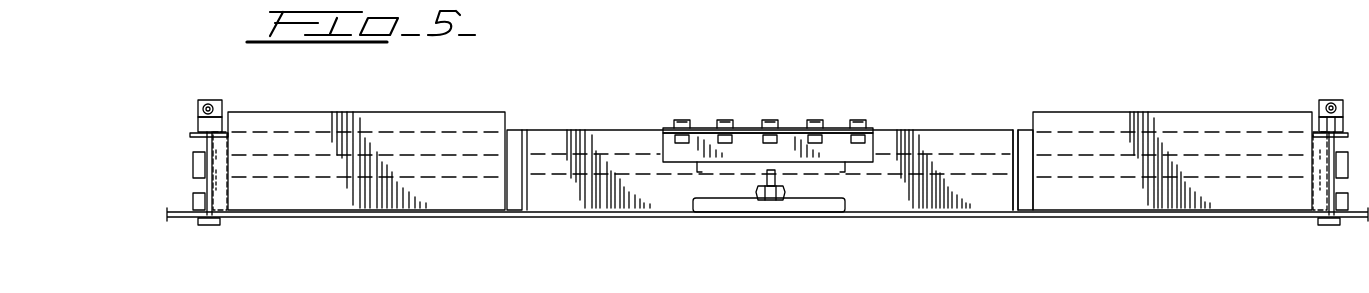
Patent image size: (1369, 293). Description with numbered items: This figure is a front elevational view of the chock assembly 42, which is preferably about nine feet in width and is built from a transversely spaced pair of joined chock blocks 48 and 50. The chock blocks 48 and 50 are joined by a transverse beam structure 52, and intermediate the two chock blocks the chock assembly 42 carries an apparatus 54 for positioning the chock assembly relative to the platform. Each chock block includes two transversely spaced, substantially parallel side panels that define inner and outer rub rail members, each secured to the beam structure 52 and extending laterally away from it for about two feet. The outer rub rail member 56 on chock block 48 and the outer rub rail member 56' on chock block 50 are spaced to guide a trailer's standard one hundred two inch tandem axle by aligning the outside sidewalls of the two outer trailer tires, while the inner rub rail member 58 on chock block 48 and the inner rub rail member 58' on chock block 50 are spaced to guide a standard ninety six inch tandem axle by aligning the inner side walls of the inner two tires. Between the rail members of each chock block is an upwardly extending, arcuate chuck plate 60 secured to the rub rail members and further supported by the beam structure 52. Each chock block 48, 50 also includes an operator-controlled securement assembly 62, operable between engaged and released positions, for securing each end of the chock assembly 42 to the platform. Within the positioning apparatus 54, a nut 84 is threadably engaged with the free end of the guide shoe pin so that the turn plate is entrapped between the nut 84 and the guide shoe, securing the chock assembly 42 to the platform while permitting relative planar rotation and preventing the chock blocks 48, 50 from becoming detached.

The chock assembly 42 is at (926, 123).
The chock block 48 is at (476, 108).
The chock block 50 is at (1173, 105).
The transverse beam structure 52 is at (615, 124).
The positioning apparatus 54 is at (708, 211).
The outer rub rail member 56 is at (241, 145).
The outer rub rail member 56' is at (1294, 197).
The inner rub rail member 58 is at (527, 149).
The inner rub rail member 58' is at (1033, 140).
The chuck plate 60 is at (410, 118).
The operator-controlled securement assembly 62 is at (196, 109).
The nut 84 is at (772, 197).